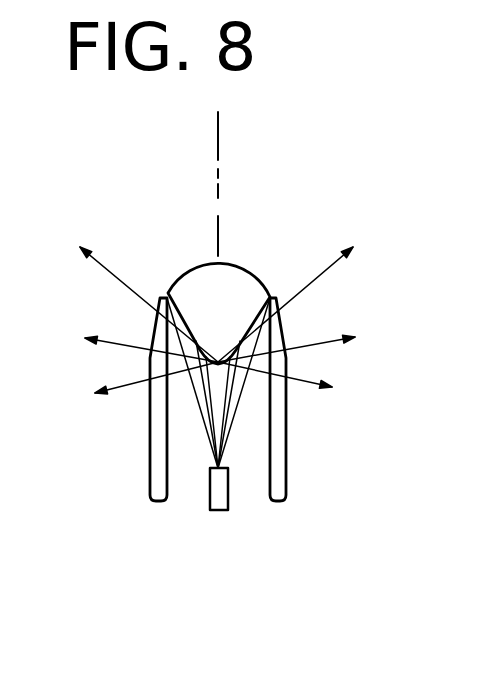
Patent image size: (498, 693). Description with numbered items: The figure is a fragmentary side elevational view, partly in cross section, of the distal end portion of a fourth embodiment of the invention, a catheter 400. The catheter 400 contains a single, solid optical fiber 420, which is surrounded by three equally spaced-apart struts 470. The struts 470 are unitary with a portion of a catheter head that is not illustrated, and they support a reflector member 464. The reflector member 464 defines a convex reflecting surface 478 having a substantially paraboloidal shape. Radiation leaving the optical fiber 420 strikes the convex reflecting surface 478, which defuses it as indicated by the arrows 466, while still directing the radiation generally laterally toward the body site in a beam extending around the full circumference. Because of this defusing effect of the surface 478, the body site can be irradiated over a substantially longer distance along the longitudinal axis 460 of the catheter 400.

The catheter 400 is at (120, 503).
The optical fiber 420 is at (202, 498).
The longitudinal axis 460 is at (219, 200).
The reflector member 464 is at (262, 276).
The arrows 466 is at (314, 338).
The struts 470 is at (152, 444).
The convex reflecting surface 478 is at (172, 322).